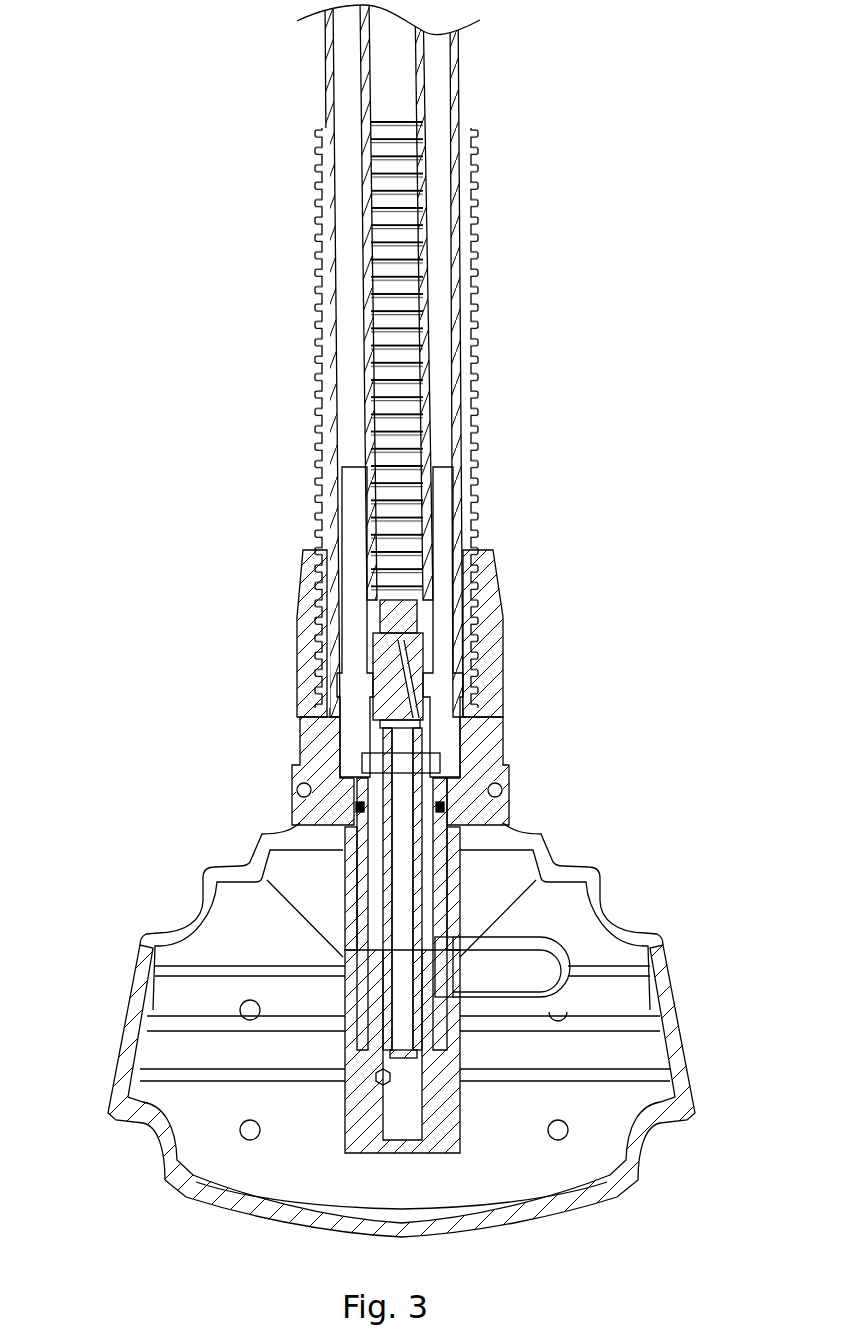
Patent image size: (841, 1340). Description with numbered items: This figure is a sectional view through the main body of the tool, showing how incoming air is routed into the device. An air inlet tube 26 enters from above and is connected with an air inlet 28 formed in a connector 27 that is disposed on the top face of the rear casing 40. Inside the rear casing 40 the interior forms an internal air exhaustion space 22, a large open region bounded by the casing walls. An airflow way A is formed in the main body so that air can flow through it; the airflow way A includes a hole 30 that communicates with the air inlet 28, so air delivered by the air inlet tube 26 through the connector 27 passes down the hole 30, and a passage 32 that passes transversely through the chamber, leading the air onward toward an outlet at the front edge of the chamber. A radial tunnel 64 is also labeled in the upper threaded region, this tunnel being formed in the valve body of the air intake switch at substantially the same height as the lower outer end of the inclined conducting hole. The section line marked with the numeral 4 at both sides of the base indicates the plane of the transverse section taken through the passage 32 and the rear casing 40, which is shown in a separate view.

The air inlet tube 26 is at (326, 84).
The radial tunnel 64 is at (494, 562).
The air inlet 28 is at (332, 681).
The connector 27 is at (298, 740).
The hole 30 is at (382, 853).
The rear casing 40 is at (624, 853).
The passage 32 is at (548, 977).
The airflow way A is at (538, 963).
The internal air exhaustion space 22 is at (597, 1142).
The section line 4- 4 is at (785, 973).